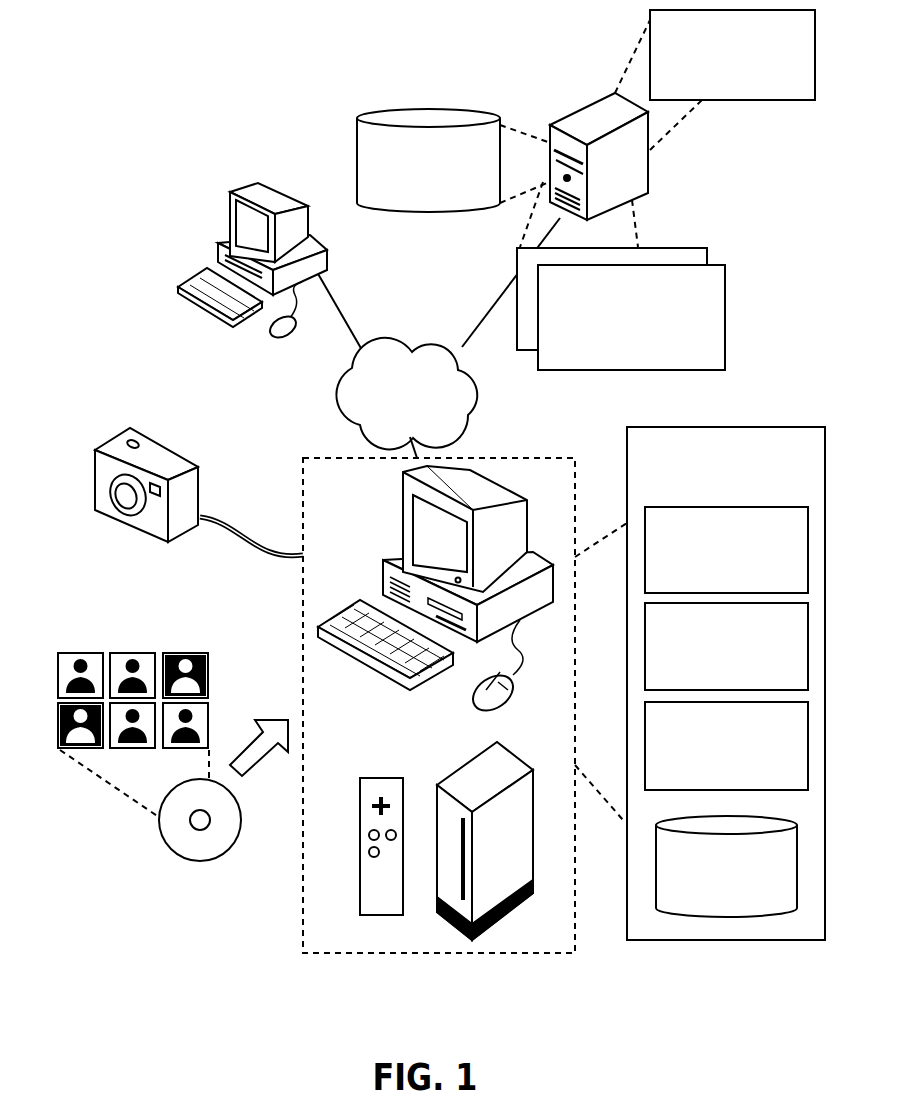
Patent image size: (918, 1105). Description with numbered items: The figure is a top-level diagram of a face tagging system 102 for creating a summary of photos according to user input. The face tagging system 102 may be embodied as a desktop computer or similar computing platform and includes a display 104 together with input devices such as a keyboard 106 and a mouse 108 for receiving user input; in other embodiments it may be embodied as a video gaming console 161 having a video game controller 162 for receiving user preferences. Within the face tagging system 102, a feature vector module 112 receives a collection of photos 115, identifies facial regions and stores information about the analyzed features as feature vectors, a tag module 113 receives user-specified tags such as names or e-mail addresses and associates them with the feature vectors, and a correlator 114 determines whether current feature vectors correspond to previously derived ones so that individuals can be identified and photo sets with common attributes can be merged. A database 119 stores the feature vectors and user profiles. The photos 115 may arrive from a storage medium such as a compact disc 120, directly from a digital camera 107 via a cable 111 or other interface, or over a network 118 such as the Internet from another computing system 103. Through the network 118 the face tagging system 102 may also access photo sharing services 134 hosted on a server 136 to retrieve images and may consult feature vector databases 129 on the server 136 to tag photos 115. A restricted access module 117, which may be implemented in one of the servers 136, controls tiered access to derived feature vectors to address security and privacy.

The face tagging system 102 is at (474, 446).
The computing system 103 is at (210, 195).
The display 104 is at (400, 533).
The keyboard 106 is at (372, 668).
The digital camera 107 is at (115, 433).
The mouse 108 is at (473, 708).
The cable 111 is at (223, 518).
The feature vector module 112 is at (726, 550).
The tag module 113 is at (726, 646).
The correlator 114 is at (726, 746).
The photos 115 is at (127, 628).
The restricted access module 117 is at (732, 55).
The network 118 is at (406, 398).
The database 119 is at (726, 866).
The compact disc 120 is at (243, 814).
The feature vector databases 129 is at (428, 160).
The photo sharing services 134 is at (621, 309).
The server 136 is at (573, 110).
The video gaming console 161 is at (455, 770).
The video game controller 162 is at (358, 795).